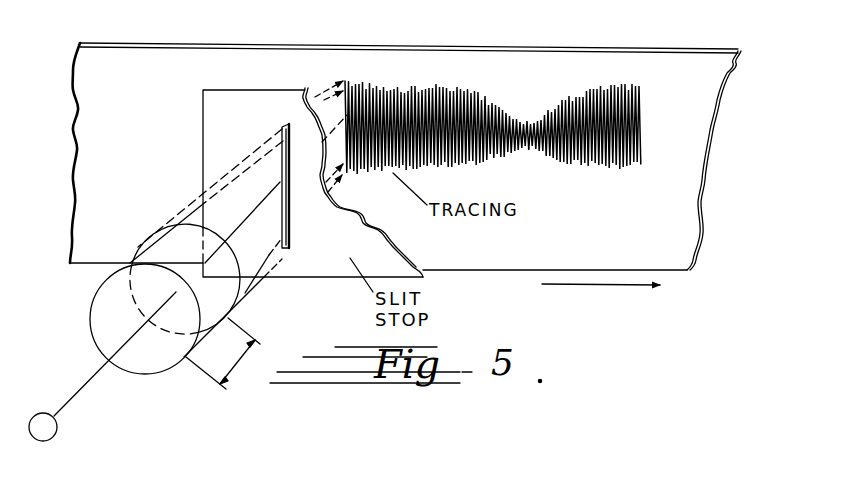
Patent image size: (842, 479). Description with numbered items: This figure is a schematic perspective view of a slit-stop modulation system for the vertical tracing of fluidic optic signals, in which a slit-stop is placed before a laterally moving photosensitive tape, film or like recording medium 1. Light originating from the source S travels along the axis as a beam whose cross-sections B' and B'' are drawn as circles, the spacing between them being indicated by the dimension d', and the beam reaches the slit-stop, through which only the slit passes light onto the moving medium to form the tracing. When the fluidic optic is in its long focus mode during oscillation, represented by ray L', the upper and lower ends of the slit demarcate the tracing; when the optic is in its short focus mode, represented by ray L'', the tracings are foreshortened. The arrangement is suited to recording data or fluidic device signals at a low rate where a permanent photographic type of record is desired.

The record strip 1 is at (690, 230).
The light source S is at (102, 366).
The light beam cross-section B' is at (145, 338).
The light beam cross-section at slit stop B'' is at (205, 279).
The ray L' is at (236, 205).
The ray L'' is at (240, 173).
The beam spacing / diameter d' is at (223, 353).